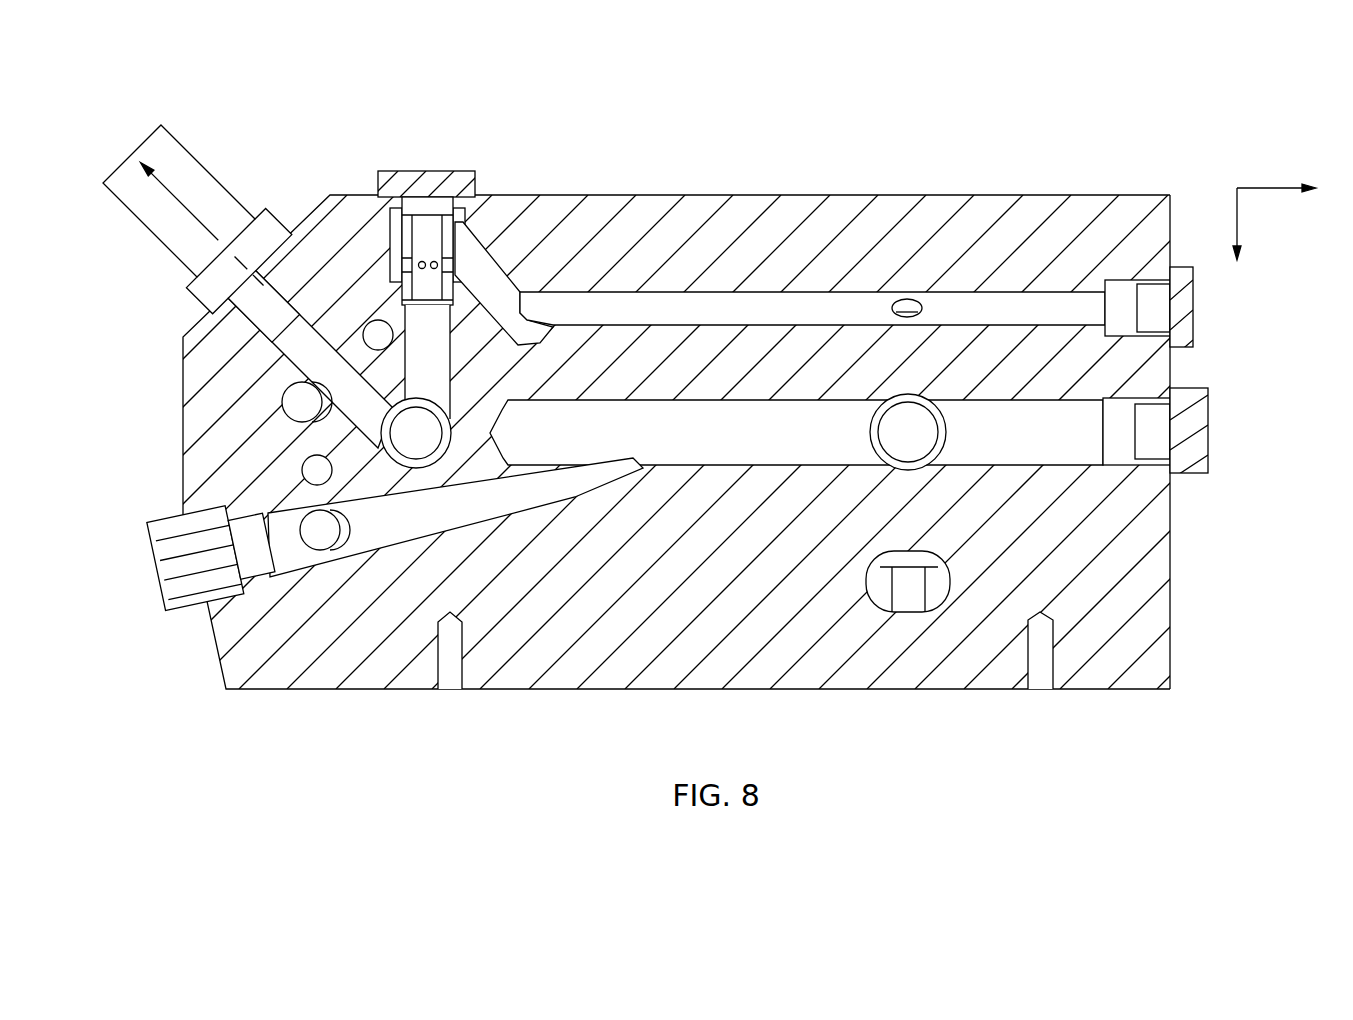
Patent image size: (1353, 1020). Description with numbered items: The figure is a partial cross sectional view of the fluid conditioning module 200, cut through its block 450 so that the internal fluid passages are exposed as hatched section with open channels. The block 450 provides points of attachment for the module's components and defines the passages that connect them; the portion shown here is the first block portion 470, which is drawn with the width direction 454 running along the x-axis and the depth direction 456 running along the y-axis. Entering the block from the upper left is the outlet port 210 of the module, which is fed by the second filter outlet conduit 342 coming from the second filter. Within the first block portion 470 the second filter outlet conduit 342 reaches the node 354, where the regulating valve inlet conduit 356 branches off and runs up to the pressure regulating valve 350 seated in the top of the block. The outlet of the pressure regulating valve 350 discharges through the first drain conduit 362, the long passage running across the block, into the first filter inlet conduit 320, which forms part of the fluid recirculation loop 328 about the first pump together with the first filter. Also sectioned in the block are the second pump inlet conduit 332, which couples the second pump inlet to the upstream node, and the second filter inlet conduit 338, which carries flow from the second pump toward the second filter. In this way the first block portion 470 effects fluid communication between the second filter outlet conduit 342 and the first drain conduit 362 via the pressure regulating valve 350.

The fluid conditioning module 200 is at (676, 405).
The outlet port 210 is at (143, 162).
The first filter inlet conduit 320 is at (905, 305).
The fluid recirculation loop 328 is at (805, 440).
The second pump inlet conduit 332 is at (320, 527).
The second filter inlet conduit 338 is at (302, 400).
The second filter outlet conduit 342 is at (185, 228).
The pressure regulating valve 350 is at (458, 150).
The node 354 is at (413, 433).
The regulating valve inlet conduit 356 is at (430, 352).
The first drain conduit 362 is at (765, 295).
The block 450 is at (1192, 626).
The width direction 454 is at (1272, 188).
The depth direction 456 is at (1237, 222).
The first block portion 470 is at (1172, 560).